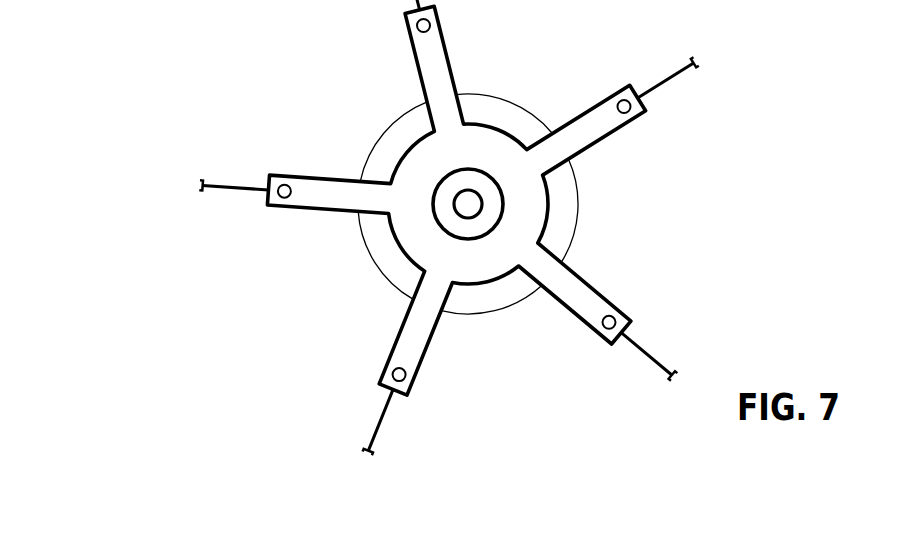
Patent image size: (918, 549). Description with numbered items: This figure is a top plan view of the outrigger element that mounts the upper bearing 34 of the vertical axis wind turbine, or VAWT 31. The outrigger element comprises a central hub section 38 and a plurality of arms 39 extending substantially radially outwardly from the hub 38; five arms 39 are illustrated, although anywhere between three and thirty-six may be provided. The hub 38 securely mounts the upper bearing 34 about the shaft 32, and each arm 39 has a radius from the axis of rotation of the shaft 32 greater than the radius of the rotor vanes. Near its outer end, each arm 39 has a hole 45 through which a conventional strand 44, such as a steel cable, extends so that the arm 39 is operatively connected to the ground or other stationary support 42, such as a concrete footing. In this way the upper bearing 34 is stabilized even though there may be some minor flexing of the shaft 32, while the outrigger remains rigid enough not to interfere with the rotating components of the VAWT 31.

The VAWT 31 is at (452, 227).
The shaft 32 is at (474, 208).
The upper bearing 34 is at (498, 207).
The central hub section 38 is at (488, 147).
The arms 39 is at (342, 181).
The stationary support 42 is at (197, 183).
The strands 44 is at (243, 184).
The holes 45 is at (280, 201).